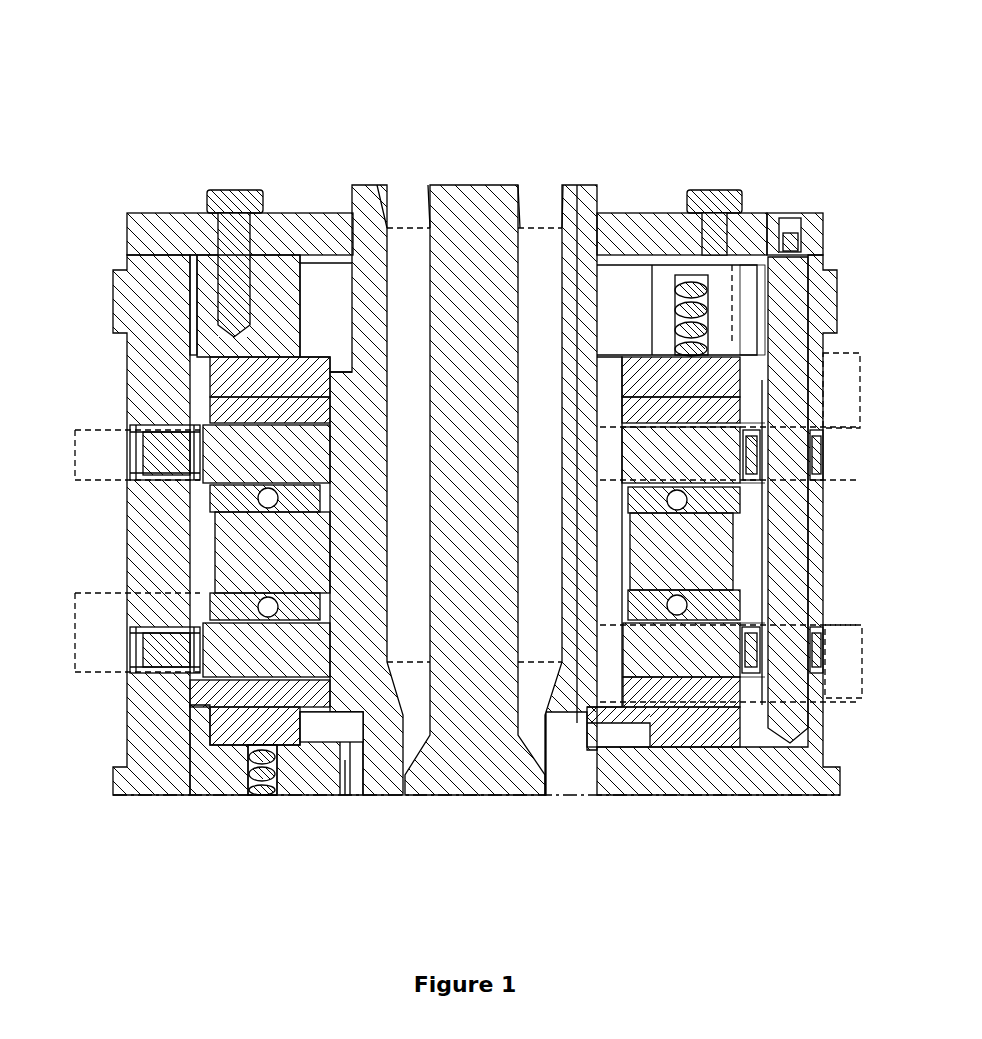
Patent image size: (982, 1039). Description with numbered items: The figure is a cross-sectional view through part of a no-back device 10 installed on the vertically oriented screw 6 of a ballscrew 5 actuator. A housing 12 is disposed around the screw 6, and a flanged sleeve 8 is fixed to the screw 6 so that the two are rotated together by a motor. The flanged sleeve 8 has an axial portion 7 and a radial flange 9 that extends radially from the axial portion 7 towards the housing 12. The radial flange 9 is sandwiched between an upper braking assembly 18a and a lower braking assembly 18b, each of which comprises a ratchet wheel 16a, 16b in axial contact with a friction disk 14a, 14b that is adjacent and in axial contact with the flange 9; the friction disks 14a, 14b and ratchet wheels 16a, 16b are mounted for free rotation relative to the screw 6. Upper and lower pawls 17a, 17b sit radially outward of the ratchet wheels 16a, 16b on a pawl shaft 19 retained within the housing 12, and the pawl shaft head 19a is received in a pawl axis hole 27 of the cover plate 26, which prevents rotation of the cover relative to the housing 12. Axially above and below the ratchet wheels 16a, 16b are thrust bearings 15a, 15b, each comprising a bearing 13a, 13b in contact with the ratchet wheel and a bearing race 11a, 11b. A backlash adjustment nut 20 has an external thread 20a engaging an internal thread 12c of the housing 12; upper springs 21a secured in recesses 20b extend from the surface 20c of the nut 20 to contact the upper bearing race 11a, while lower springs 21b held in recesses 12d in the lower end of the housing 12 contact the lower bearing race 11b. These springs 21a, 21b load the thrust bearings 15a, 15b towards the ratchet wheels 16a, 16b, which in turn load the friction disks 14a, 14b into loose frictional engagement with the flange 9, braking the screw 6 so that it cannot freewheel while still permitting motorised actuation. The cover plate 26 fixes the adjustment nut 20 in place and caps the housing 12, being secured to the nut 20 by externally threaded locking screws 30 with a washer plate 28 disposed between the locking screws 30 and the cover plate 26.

The ballscrew 5 is at (457, 172).
The screw 6 is at (505, 220).
The axial portion 7 is at (362, 458).
The flanged sleeve 8 is at (576, 215).
The radial flange 9 is at (265, 552).
The no-back device 10 is at (748, 78).
The upper bearing race 11a is at (240, 380).
The lower bearing race 11b is at (257, 723).
The housing 12 is at (128, 282).
The internal thread 12c is at (790, 287).
The recesses 12d is at (278, 750).
The upper bearing 13a is at (237, 410).
The lower bearing 13b is at (222, 713).
The upper friction disk 14a is at (210, 500).
The lower friction disk 14b is at (225, 605).
The upper thrust bearing 15a is at (860, 390).
The lower thrust bearing 15b is at (862, 660).
The upper ratchet wheel 16a is at (237, 457).
The lower ratchet wheel 16b is at (230, 652).
The upper pawl 17a is at (815, 452).
The lower pawl 17b is at (815, 648).
The upper braking assembly 18a is at (75, 470).
The lower braking assembly 18b is at (75, 637).
The pawl shaft 19 is at (790, 505).
The pawl shaft head 19a is at (800, 237).
The backlash adjustment nut 20 is at (207, 313).
The external thread 20a is at (760, 283).
The recesses 20b is at (700, 282).
The surface 20c is at (680, 352).
The upper spring 21a is at (708, 322).
The lower spring 21b is at (264, 768).
The cover plate 26 is at (168, 240).
The pawl axis hole 27 is at (790, 233).
The washer plate 28 is at (700, 270).
The locking screw 30 is at (238, 205).